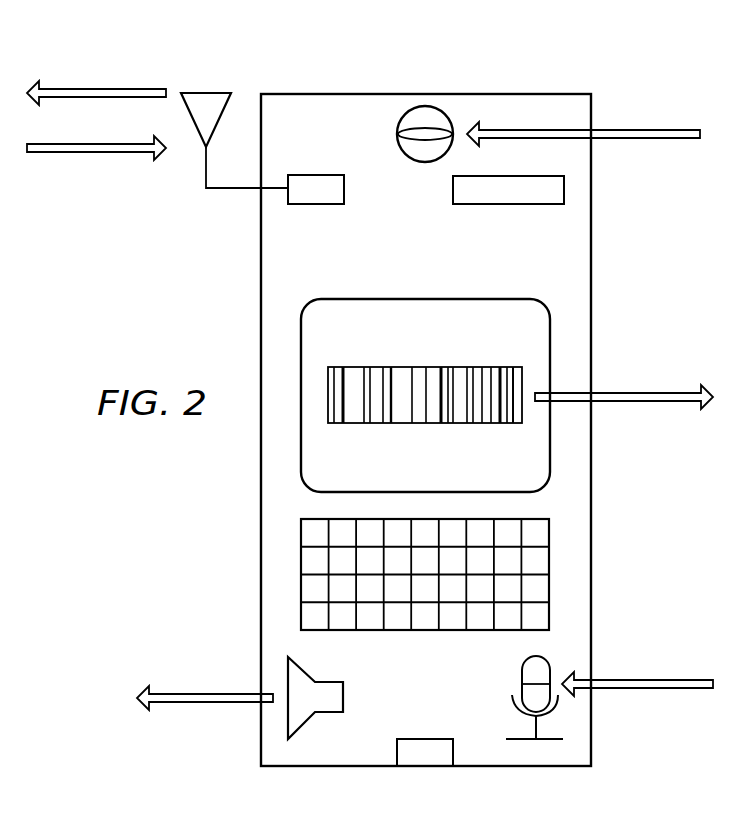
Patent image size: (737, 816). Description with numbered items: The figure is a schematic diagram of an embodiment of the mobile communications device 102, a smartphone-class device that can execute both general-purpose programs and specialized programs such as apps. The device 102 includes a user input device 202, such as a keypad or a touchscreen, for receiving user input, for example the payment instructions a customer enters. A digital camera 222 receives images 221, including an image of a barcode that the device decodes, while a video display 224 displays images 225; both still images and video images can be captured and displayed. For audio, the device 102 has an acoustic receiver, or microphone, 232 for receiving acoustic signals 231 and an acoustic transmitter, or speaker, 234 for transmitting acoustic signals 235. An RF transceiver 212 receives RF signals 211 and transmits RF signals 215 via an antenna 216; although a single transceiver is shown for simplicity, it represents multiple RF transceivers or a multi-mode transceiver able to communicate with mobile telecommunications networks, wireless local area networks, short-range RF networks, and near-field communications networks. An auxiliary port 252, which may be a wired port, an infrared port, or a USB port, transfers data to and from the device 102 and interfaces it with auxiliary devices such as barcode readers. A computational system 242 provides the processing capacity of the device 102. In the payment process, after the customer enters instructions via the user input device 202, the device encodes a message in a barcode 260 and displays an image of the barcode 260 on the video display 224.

The mobile communications device 102 is at (119, 513).
The user input device 202 is at (378, 631).
The RF signals 211 is at (97, 152).
The RF transceiver 212 is at (345, 189).
The RF signals 215 is at (97, 89).
The antenna 216 is at (206, 93).
The images 221 is at (645, 140).
The digital camera 222 is at (396, 135).
The video display 224 is at (425, 299).
The images 225 is at (643, 393).
The acoustic signals 231 is at (644, 690).
The acoustic receiver 232 is at (519, 675).
The acoustic transmitter 234 is at (329, 713).
The acoustic signals 235 is at (204, 704).
The computational system 242 is at (506, 205).
The auxiliary port 252 is at (425, 739).
The barcode 260 is at (400, 425).